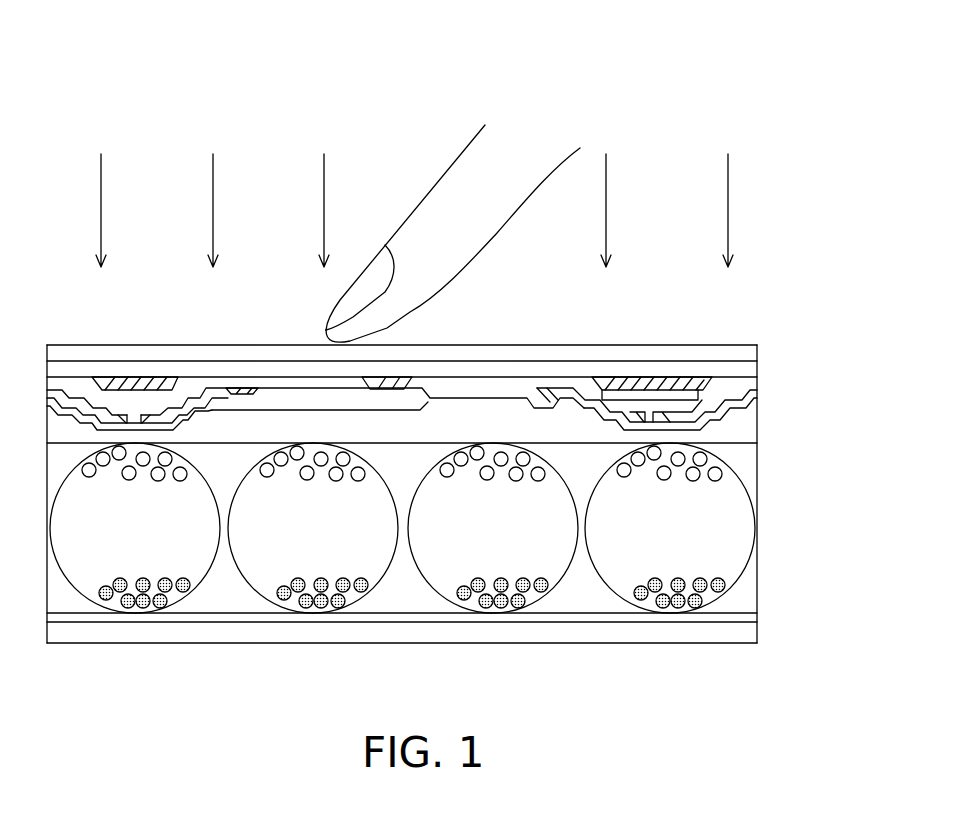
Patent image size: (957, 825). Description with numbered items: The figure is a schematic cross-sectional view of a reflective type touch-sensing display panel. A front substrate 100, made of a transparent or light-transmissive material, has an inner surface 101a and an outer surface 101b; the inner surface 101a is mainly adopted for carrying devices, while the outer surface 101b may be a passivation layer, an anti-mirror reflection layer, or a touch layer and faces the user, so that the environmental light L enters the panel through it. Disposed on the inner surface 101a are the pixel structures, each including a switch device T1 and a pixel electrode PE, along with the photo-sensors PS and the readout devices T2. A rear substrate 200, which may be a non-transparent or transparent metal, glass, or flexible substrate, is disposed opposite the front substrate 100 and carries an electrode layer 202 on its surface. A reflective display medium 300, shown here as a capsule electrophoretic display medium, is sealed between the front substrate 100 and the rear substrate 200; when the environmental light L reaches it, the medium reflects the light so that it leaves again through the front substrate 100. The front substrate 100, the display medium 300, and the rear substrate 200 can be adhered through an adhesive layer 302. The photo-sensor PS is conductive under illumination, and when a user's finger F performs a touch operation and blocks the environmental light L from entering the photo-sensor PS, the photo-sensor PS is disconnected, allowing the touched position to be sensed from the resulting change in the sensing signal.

The front substrate 100 is at (752, 353).
The inner surface 101a is at (731, 351).
The outer surface 101b is at (728, 334).
The adhesive layer 302 is at (752, 430).
The reflective display medium 300 is at (738, 522).
The electrode layer 202 is at (753, 613).
The rear substrate 200 is at (753, 632).
The environmental light L is at (324, 195).
The finger F is at (427, 199).
The photo-sensor PS is at (305, 334).
The pixel electrode PE is at (512, 400).
The switch device T1 is at (737, 322).
The readout device T2 is at (211, 319).